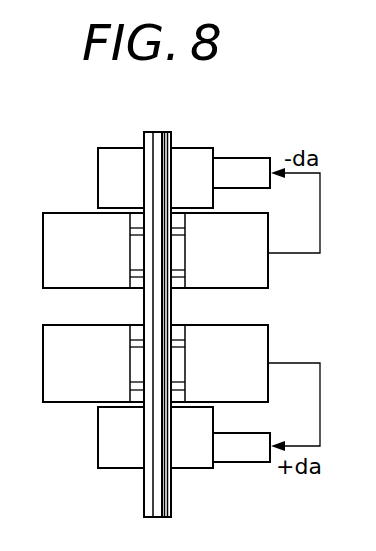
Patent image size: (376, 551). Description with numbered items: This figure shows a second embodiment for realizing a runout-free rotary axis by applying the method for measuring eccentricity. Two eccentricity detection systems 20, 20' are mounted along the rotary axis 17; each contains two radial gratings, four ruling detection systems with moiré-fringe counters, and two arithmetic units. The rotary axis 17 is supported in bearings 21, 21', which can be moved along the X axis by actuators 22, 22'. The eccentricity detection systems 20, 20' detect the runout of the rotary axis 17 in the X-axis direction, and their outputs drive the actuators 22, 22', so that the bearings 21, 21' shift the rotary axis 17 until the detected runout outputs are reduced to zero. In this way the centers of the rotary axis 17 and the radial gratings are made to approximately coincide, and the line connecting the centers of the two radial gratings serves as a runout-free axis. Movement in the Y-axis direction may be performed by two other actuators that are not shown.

The rotary axis 17 is at (151, 142).
The bearing 21 is at (119, 178).
The actuator 22 is at (244, 151).
The eccentricity detection system 20 is at (185, 253).
The eccentricity detection system 20' is at (187, 363).
The bearing 21' is at (161, 471).
The actuator 22' is at (248, 474).